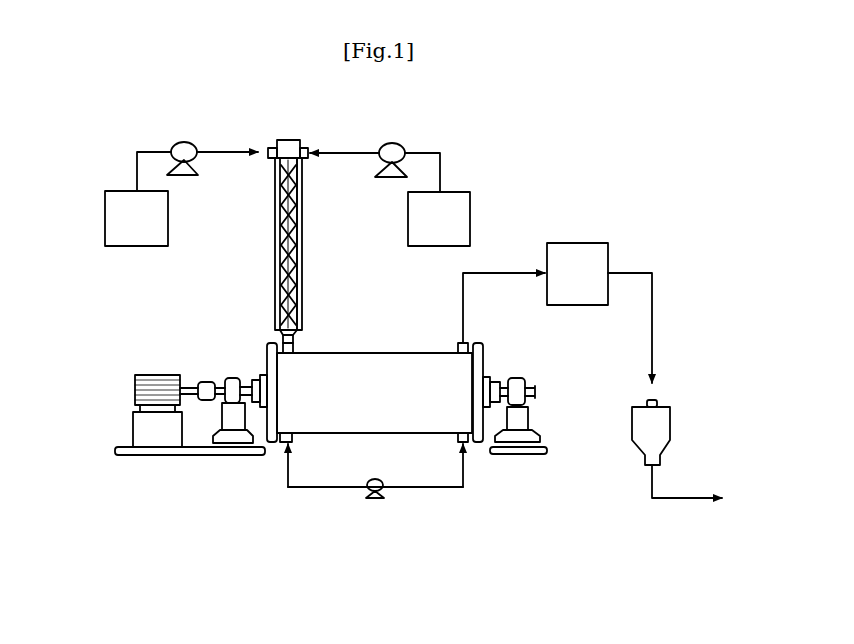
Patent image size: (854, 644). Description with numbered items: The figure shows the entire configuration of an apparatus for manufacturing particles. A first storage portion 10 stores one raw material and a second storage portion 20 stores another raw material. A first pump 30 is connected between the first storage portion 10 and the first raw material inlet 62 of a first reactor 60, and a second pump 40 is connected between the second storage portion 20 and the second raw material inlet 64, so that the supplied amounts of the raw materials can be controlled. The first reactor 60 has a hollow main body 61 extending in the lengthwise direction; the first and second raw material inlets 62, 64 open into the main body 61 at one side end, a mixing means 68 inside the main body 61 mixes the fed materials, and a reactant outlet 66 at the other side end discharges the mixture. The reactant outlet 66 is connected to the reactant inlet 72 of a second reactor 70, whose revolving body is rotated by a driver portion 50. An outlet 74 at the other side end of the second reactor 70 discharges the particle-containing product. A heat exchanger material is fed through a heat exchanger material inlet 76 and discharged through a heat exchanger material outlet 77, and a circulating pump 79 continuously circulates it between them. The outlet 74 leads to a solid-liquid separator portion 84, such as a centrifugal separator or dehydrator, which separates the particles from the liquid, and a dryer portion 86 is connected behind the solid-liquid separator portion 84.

The first storage portion 10 is at (105, 235).
The second storage portion 20 is at (470, 228).
The first pump 30 is at (190, 143).
The second pump 40 is at (398, 143).
The driver portion 50 is at (135, 392).
The first reactor 60 is at (289, 225).
The main body 61 is at (302, 243).
The first raw material inlet 62 is at (274, 143).
The second raw material inlet 64 is at (303, 143).
The reactant outlet 66 is at (294, 337).
The mixing means 68 is at (280, 242).
The second reactor 70 is at (379, 351).
The reactant inlet 72 is at (296, 352).
The outlet 74 is at (458, 347).
The heat exchanger material inlet 76 is at (282, 448).
The heat exchanger material outlet 77 is at (470, 445).
The circulating pump 79 is at (383, 497).
The solid-liquid separator portion 84 is at (597, 252).
The dryer portion 86 is at (666, 425).